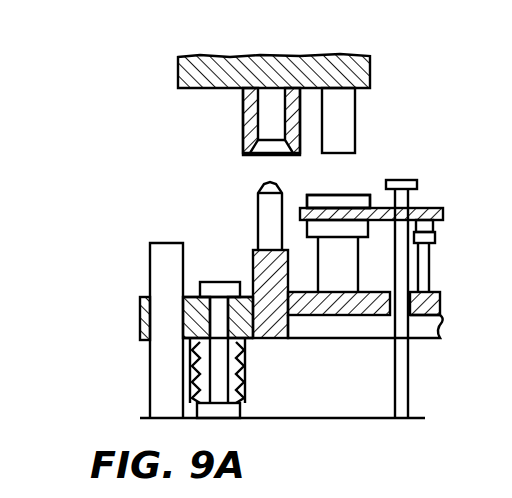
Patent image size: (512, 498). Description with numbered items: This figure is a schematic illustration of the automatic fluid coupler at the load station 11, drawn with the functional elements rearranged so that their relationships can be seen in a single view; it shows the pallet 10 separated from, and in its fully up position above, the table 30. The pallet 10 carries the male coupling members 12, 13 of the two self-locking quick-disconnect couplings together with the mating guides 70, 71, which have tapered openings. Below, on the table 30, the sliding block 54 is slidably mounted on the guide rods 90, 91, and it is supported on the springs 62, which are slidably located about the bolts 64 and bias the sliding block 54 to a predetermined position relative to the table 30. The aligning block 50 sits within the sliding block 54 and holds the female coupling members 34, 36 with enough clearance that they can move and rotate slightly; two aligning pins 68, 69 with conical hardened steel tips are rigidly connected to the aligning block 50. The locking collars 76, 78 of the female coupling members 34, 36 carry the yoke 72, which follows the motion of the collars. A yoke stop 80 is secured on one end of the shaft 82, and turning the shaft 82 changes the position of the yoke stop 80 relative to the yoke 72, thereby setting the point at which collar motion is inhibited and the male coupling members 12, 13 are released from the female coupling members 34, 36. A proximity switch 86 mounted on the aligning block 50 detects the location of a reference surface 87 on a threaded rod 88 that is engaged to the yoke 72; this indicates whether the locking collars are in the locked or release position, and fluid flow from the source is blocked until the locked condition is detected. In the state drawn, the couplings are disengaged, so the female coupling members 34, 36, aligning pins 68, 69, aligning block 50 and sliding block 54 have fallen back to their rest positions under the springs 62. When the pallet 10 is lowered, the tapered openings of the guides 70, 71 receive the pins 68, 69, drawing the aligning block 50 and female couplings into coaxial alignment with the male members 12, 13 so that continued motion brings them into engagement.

The pallet 10 is at (372, 72).
The load station 11 is at (120, 238).
The male coupling member 12 is at (394, 120).
The male coupling member 13 is at (357, 112).
The table 30 is at (311, 416).
The female coupling member 34 is at (372, 217).
The female coupling member 36 is at (360, 191).
The aligning block 50 is at (354, 322).
The sliding block 54 is at (139, 321).
The springs 62 is at (242, 392).
The bolts 64 is at (220, 290).
The aligning pin 68 is at (225, 260).
The aligning pin 69 is at (266, 232).
The mating guide 70 is at (222, 121).
The mating guide 71 is at (243, 128).
The yoke 72 is at (443, 210).
The locking collar 76 is at (326, 185).
The locking collar 78 is at (310, 203).
The yoke stop 80 is at (412, 181).
The shaft 82 is at (410, 380).
The proximity switch 86 is at (430, 272).
The reference surface 87 is at (437, 241).
The threaded rod 88 is at (436, 228).
The guide rod 90 is at (120, 332).
The guide rod 91 is at (156, 398).